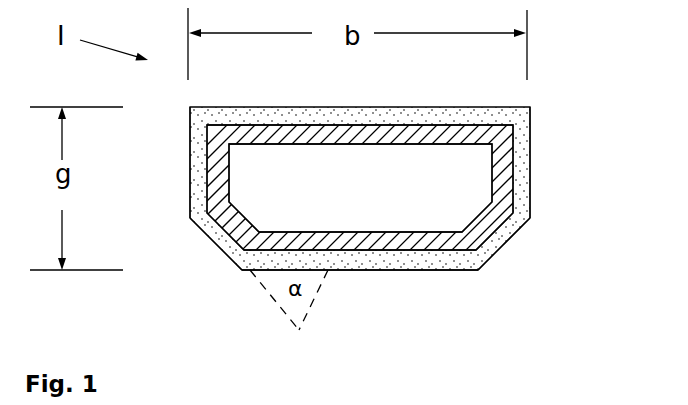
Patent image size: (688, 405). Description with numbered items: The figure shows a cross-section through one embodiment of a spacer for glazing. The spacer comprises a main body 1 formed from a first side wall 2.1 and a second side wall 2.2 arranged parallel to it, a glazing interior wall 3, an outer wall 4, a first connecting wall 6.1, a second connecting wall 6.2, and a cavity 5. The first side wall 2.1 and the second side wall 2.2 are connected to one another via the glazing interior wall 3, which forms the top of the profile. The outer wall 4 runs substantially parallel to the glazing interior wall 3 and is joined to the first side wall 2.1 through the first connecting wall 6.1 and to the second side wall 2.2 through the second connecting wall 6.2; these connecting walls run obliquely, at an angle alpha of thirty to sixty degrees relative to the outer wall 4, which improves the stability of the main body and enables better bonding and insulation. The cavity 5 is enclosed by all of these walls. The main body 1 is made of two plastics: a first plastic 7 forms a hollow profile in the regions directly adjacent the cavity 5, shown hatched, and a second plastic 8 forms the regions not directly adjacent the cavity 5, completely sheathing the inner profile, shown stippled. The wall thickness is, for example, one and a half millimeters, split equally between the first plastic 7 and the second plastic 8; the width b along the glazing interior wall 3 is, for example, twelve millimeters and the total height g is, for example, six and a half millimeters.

The main body 1 is at (368, 182).
The first side wall 2.1 is at (190, 172).
The second side wall 2.2 is at (530, 165).
The glazing interior wall 3 is at (407, 107).
The outer wall 4 is at (255, 270).
The cavity 5 is at (340, 168).
The first connecting wall 6.1 is at (200, 225).
The second connecting wall 6.2 is at (513, 238).
The first plastic 7 is at (413, 237).
The second plastic 8 is at (393, 260).